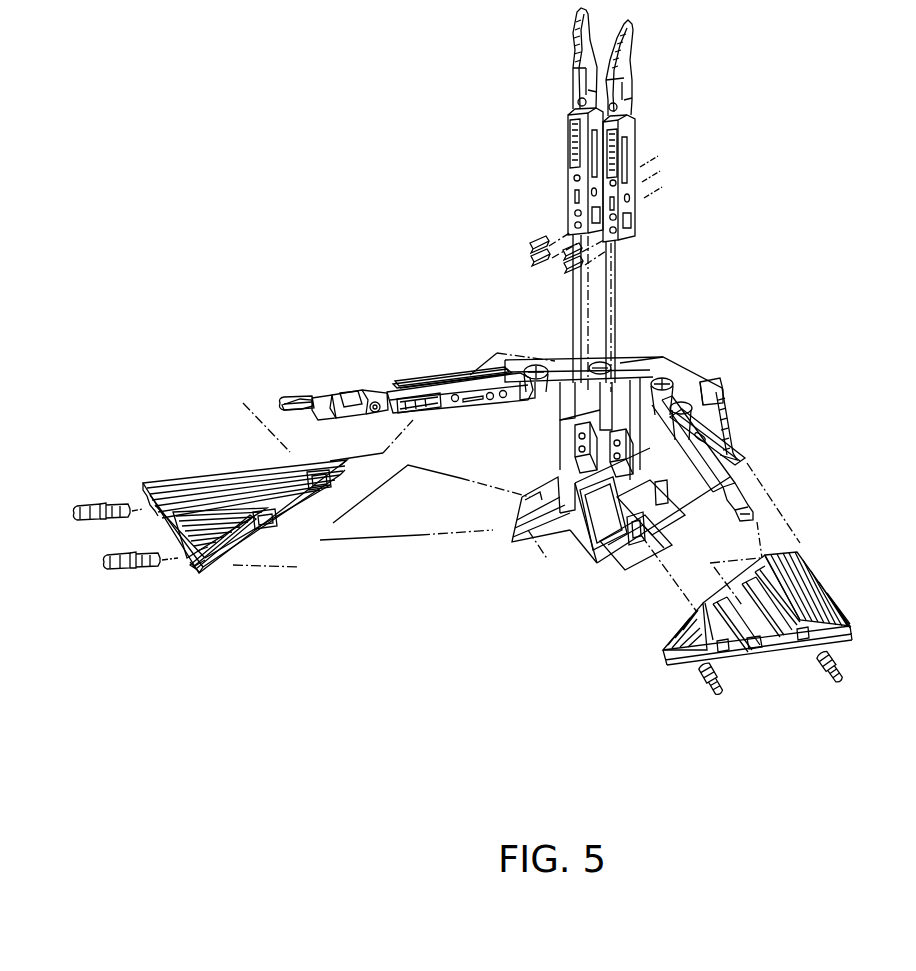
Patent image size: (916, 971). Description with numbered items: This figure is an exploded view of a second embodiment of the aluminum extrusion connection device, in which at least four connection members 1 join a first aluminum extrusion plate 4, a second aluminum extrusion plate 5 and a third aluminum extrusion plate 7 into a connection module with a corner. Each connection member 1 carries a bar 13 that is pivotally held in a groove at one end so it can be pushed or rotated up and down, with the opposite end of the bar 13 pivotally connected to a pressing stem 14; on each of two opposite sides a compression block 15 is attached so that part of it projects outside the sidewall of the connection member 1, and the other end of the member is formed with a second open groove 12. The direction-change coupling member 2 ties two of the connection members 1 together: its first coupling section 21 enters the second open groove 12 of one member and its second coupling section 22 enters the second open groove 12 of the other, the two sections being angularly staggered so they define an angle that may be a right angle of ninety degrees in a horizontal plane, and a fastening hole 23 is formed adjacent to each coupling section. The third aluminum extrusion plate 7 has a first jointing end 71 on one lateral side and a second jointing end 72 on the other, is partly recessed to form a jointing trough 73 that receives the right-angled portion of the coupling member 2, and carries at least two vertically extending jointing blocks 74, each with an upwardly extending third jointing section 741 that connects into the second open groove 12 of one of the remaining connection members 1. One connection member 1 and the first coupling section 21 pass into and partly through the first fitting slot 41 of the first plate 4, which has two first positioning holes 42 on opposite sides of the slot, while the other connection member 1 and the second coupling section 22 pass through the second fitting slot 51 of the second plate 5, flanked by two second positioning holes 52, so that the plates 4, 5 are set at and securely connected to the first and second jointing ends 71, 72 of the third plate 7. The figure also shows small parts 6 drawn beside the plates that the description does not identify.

The connection member 1 is at (636, 158).
The second open groove 12 is at (626, 216).
The bar 13 is at (383, 392).
The pressing stem 14 is at (310, 400).
The compression block 15 is at (430, 412).
The direction-change coupling member 2 is at (662, 355).
The first coupling section 21 is at (497, 353).
The second coupling section 22 is at (705, 395).
The fastening hole 23 is at (556, 368).
The first aluminum extrusion plate 4 is at (205, 478).
The first fitting slot 41 is at (281, 519).
The first positioning holes 42 is at (320, 488).
The second aluminum extrusion plate 5 is at (818, 557).
The second fitting slot 51 is at (764, 650).
The second positioning holes 52 is at (700, 662).
The screw 6 is at (103, 565).
The third aluminum extrusion plate 7 is at (520, 532).
The first jointing end 71 is at (545, 492).
The second jointing end 72 is at (627, 563).
The jointing trough 73 is at (610, 395).
The jointing blocks 74 is at (587, 545).
The third jointing section 741 is at (560, 532).